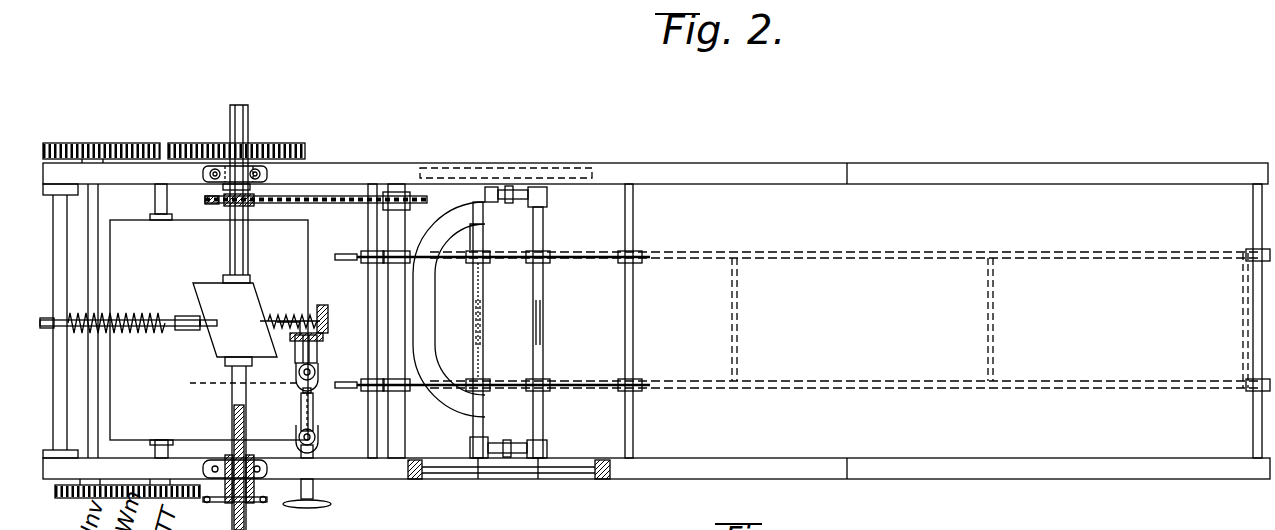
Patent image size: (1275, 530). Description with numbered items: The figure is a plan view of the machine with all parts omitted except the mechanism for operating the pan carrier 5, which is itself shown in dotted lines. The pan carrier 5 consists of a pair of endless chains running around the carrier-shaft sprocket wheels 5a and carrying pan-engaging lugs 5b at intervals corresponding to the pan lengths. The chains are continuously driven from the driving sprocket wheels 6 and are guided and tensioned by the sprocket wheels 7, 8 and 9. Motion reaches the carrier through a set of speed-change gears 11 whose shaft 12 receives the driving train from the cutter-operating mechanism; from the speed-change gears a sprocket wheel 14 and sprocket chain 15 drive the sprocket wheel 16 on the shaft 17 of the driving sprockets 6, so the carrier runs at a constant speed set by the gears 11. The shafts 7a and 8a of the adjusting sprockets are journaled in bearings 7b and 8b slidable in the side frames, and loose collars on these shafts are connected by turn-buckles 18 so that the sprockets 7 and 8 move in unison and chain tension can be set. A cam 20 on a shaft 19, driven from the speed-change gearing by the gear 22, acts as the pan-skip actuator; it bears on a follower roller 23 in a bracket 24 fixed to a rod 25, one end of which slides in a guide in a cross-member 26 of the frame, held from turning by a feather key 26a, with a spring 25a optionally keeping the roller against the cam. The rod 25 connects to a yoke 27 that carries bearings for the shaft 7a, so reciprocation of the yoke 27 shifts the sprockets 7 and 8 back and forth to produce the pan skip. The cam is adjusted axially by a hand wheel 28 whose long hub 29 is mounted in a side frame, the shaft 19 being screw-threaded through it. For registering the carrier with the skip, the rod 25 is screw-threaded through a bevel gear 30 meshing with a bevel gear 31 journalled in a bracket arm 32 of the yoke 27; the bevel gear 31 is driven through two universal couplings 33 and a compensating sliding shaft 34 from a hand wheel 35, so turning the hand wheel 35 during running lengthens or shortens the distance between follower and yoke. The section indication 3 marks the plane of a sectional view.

The section line / shaft 3 is at (222, 395).
The pan carrier 5 is at (910, 386).
The carrier-shaft sprocket wheels 5a is at (1255, 391).
The pan-engaging lugs 5b is at (737, 322).
The driving sprocket wheels 6 is at (350, 262).
The tensioning and guiding sprocket wheel 7 is at (484, 262).
The shaft 7a is at (485, 322).
The bearing 7b is at (478, 476).
The tensioning and guiding sprocket wheel 8 is at (546, 262).
The shaft 8a is at (545, 322).
The bearing 8b is at (538, 476).
The tensioning and guiding sprocket wheel 9 is at (640, 258).
The speed-change gears 11 is at (136, 211).
The shaft of the speed-change gears 12 is at (167, 200).
The sprocket wheel 14 is at (216, 207).
The sprocket chain 15 is at (306, 207).
The sprocket wheel 16 is at (411, 196).
The shaft of the carrier driving sprockets 17 is at (393, 218).
The turn-buckles 18 is at (503, 200).
The shaft 19 is at (240, 252).
The cam 20 is at (250, 297).
The gear 22 is at (285, 150).
The follower roller 23 is at (186, 316).
The bracket 24 is at (195, 330).
The rod 25 is at (278, 318).
The spring 25a is at (120, 335).
The cross-member 26 is at (63, 235).
The spline or feather key 26a is at (52, 320).
The yoke 27 is at (433, 413).
The hand wheel 28 is at (265, 503).
The hub 29 is at (228, 490).
The bevel gear 30 is at (322, 305).
The bevel gear 31 is at (292, 352).
The bracket arm 32 is at (318, 372).
The universal couplings 33 is at (318, 437).
The compensating sliding shaft 34 is at (300, 424).
The hand wheel 35 is at (330, 506).